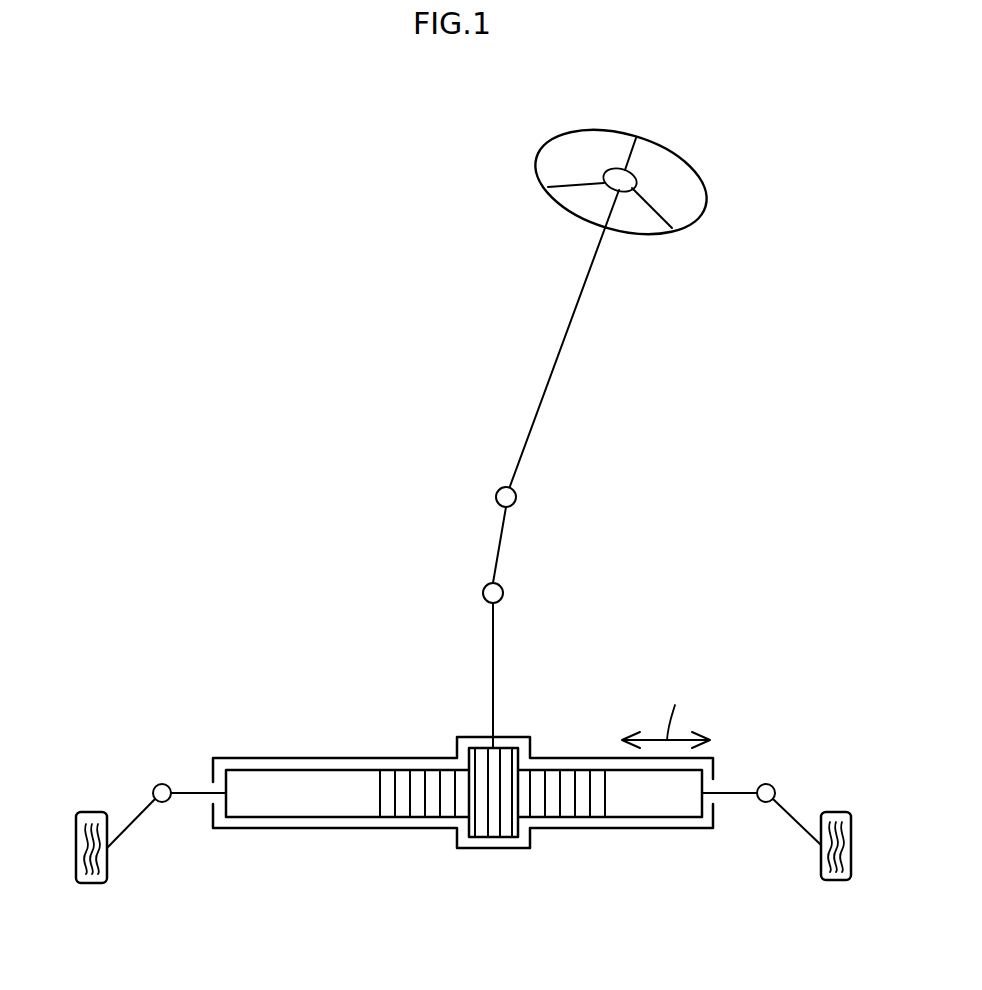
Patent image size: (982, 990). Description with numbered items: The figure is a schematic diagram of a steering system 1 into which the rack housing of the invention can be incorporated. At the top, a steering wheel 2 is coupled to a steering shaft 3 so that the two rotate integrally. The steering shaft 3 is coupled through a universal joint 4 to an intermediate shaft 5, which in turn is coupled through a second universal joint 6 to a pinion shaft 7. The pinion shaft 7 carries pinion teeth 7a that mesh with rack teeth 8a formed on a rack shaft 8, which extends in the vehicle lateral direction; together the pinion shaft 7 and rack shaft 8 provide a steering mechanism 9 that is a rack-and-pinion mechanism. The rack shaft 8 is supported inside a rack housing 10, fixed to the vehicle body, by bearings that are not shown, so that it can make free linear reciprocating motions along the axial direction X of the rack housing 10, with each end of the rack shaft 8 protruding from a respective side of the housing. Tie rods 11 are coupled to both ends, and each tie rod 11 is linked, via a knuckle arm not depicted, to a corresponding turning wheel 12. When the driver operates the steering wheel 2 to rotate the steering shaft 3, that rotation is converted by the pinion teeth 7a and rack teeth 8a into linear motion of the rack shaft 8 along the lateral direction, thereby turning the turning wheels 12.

The steering system 1 is at (712, 143).
The steering wheel 2 is at (608, 132).
The steering shaft 3 is at (588, 275).
The universal joint 4 is at (516, 497).
The intermediate shaft 5 is at (498, 545).
The universal joint 6 is at (503, 594).
The pinion shaft 7 is at (494, 701).
The pinion teeth 7a is at (505, 830).
The rack shaft 8 is at (568, 821).
The rack teeth 8a is at (433, 805).
The steering mechanism 9 is at (537, 852).
The rack housing 10 is at (367, 757).
The tie rods 11 is at (137, 820).
The turning wheel 12 is at (95, 884).